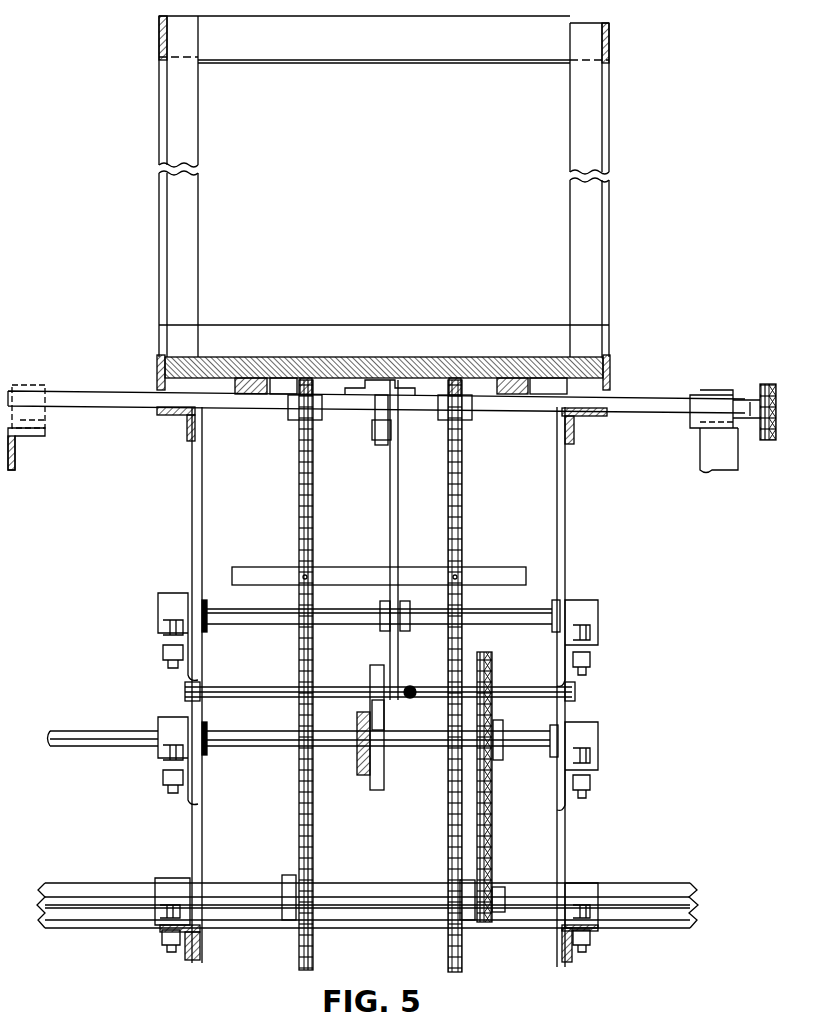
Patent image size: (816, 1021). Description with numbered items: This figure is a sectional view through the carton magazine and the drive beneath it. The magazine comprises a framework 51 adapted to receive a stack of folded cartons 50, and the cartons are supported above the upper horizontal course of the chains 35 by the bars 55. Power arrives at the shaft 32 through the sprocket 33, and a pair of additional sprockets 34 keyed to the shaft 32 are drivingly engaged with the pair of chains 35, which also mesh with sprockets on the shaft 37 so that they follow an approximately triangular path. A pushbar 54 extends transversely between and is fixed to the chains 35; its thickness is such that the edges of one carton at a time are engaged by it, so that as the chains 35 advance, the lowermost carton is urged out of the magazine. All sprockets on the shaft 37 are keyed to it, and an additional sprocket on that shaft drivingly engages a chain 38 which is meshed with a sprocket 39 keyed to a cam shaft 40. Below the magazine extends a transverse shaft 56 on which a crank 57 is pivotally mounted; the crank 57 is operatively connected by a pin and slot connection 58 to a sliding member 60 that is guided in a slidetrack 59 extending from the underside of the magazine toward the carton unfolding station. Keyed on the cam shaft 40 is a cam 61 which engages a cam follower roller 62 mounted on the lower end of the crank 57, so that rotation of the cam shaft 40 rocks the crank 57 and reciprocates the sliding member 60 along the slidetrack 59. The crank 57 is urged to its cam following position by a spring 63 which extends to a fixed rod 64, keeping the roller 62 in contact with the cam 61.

The shaft 32 is at (662, 416).
The sprocket 33 is at (770, 440).
The additional sprockets 34 is at (292, 404).
The chains 35 is at (313, 476).
The shaft 37 is at (356, 895).
The chain 38 is at (492, 818).
The sprocket 39 is at (498, 760).
The cam shaft 40 is at (263, 748).
The folded cartons 50 is at (357, 352).
The framework 51 is at (187, 205).
The pushbar 54 is at (343, 582).
The bars 55 is at (252, 394).
The transverse shaft 56 is at (500, 626).
The crank 57 is at (398, 521).
The pin and slot connection 58 is at (378, 442).
The slidetrack 59 is at (408, 380).
The sliding member 60 is at (386, 396).
The cam 61 is at (370, 668).
The cam follower roller 62 is at (372, 722).
The spring 63 is at (407, 686).
The fixed rod 64 is at (418, 699).